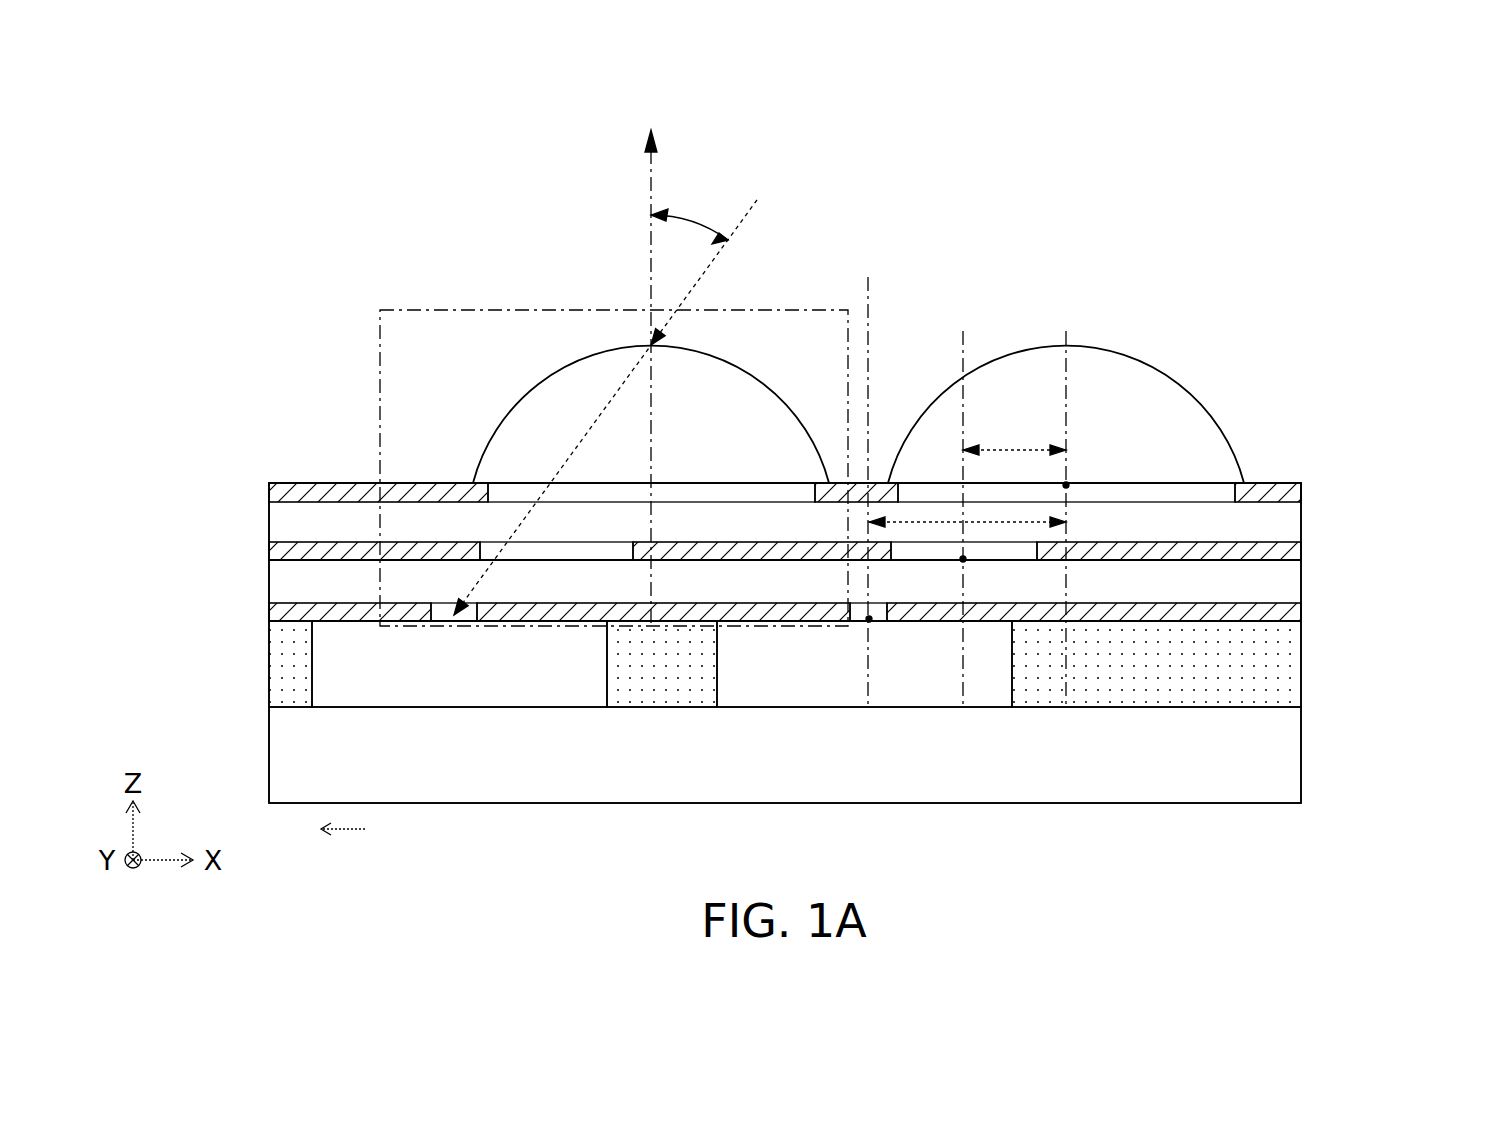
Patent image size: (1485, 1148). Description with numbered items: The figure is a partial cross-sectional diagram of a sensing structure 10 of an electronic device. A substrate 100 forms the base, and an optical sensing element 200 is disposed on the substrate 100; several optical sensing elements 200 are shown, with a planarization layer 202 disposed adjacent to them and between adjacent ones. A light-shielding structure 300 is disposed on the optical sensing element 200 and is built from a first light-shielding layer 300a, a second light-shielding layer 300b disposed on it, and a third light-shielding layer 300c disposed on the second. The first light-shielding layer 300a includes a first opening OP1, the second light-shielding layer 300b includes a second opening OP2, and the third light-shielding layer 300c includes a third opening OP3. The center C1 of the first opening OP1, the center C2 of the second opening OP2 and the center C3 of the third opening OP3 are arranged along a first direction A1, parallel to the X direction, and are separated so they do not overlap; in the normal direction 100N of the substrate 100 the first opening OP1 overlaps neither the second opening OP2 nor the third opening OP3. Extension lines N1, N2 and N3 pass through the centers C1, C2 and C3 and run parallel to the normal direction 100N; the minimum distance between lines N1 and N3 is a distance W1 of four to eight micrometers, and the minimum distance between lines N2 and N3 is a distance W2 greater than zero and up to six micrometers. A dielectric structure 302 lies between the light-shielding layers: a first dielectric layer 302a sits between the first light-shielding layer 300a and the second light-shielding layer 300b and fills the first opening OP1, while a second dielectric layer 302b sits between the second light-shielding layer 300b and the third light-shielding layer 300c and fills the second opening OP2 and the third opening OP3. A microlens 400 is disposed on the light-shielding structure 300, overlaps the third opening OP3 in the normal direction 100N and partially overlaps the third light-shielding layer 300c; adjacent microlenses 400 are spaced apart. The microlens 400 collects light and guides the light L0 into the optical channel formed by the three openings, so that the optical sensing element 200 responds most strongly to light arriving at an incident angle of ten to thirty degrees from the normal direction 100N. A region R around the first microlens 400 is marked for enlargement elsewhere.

The sensing structure 10 is at (240, 138).
The substrate 100 is at (1285, 760).
The normal direction 100N is at (647, 363).
The optical sensing element 200 is at (375, 687).
The planarization layer 202 is at (1285, 667).
The light-shielding structure 300 is at (166, 475).
The first light-shielding layer 300a is at (269, 616).
The second light-shielding layer 300b is at (269, 556).
The third light-shielding layer 300c is at (269, 497).
The dielectric structure 302 is at (1400, 503).
The first dielectric layer 302a is at (1285, 582).
The second dielectric layer 302b is at (1285, 527).
The microlens 400 is at (489, 447).
The region R is at (447, 309).
The light L0 is at (613, 393).
The extension line N1 is at (863, 477).
The extension line N2 is at (954, 504).
The extension line N3 is at (1063, 504).
The distance W1 is at (967, 509).
The distance W2 is at (1014, 436).
The center of the first opening C1 is at (866, 622).
The center of the second opening C2 is at (960, 562).
The center of the third opening C3 is at (1070, 482).
The first opening OP1 is at (441, 614).
The second opening OP2 is at (560, 559).
The third opening OP3 is at (721, 501).
The first direction A1 is at (363, 830).